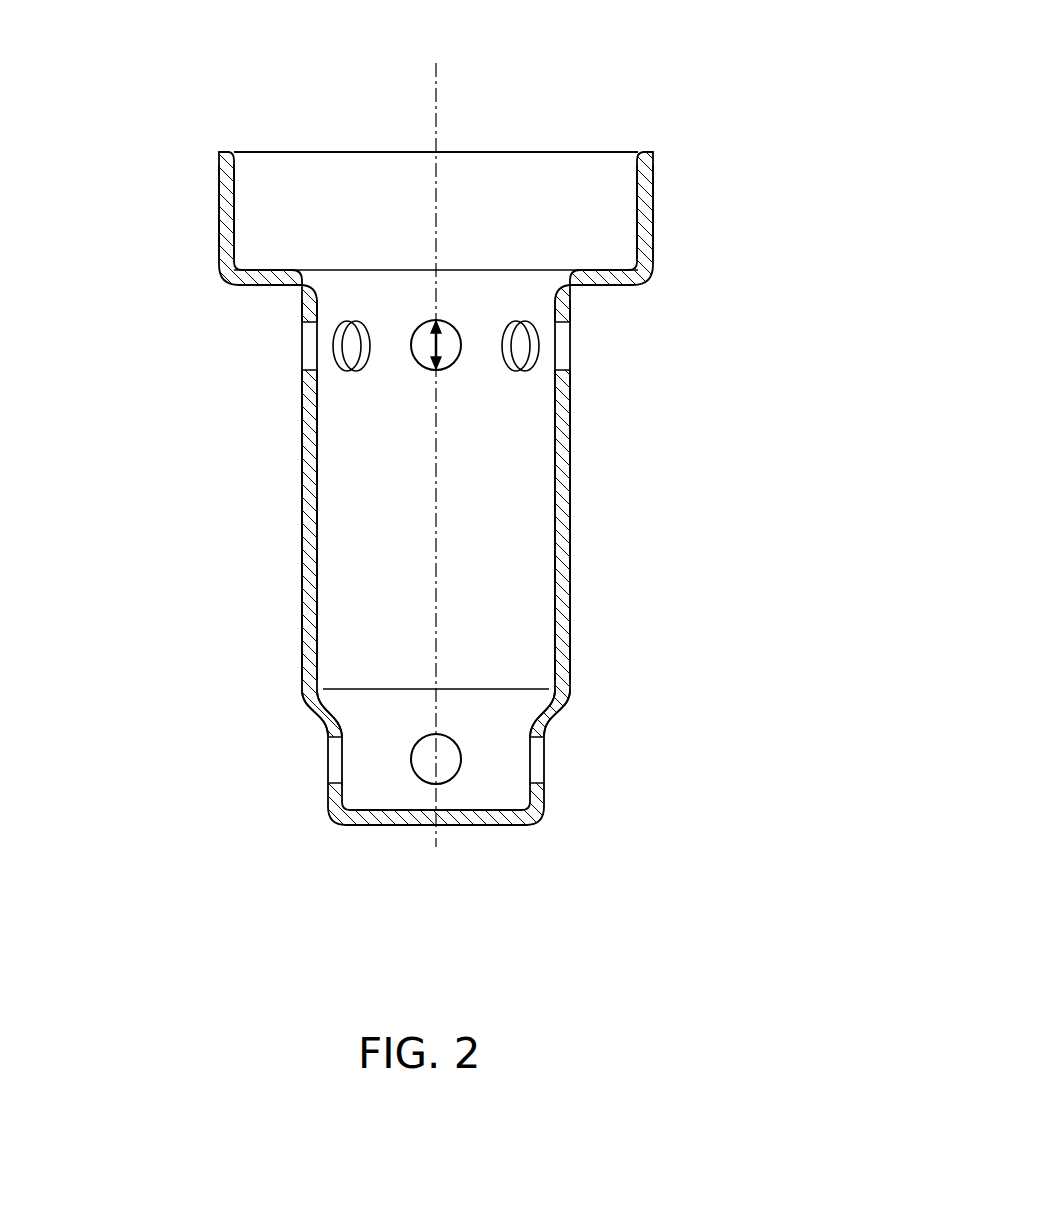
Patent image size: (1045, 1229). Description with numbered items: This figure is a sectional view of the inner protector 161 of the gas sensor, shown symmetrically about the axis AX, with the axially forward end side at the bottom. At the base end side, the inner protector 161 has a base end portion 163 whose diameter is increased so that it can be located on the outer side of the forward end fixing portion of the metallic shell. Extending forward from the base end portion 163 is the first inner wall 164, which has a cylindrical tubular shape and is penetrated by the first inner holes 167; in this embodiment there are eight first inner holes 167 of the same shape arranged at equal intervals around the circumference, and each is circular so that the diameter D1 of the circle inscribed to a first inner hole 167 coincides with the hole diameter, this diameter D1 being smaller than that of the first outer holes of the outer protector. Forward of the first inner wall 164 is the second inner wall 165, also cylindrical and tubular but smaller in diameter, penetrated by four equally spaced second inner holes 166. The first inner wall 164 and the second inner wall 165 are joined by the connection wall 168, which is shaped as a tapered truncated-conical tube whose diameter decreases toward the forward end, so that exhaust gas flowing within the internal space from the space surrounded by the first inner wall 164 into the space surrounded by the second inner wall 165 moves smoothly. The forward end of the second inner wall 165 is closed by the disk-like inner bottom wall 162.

The inner protector 161 is at (603, 101).
The inner bottom wall 162 is at (473, 826).
The base end portion 163 is at (218, 233).
The first inner wall 164 is at (302, 452).
The second inner wall 165 is at (547, 730).
The second inner holes 166 is at (330, 770).
The first inner holes 167 is at (340, 337).
The connection wall 168 is at (320, 709).
The axis AX is at (437, 70).
The diameter of circle inscribed to first inner hole D1 is at (413, 354).